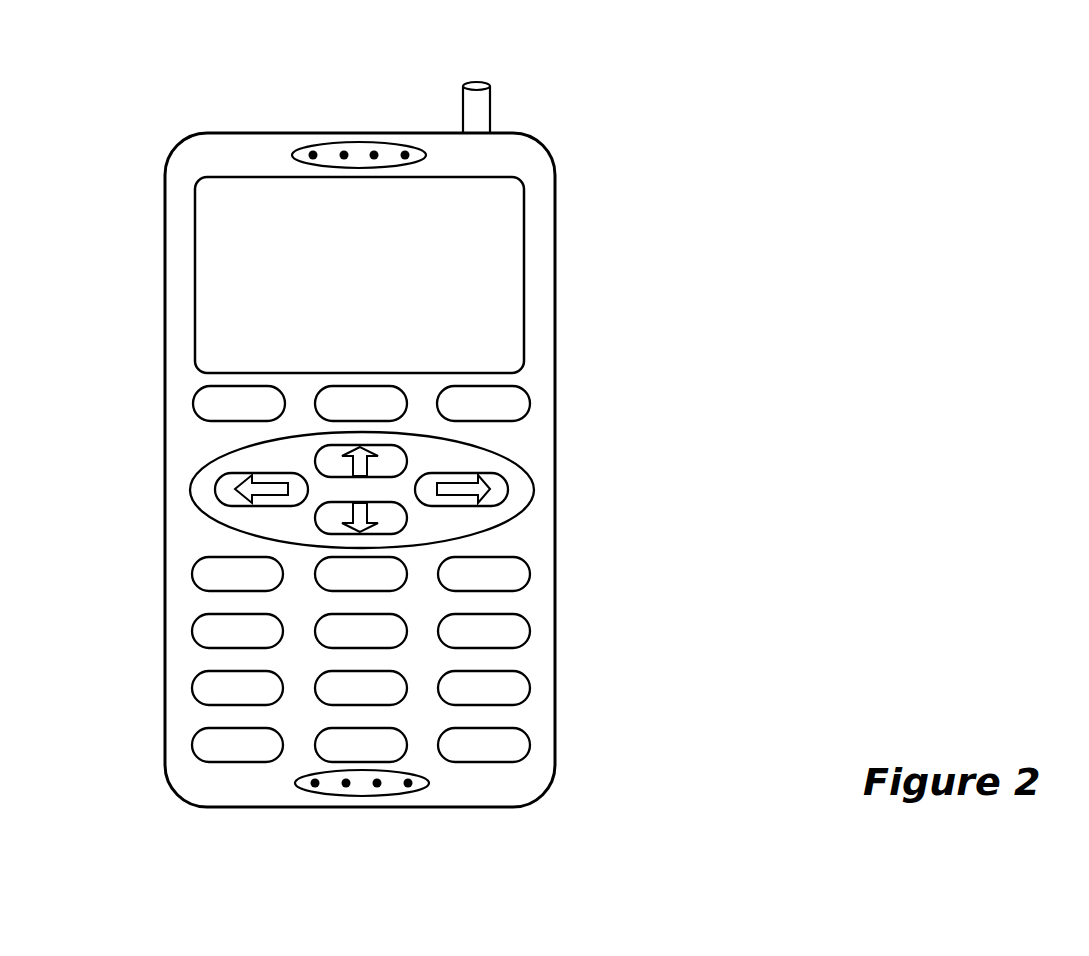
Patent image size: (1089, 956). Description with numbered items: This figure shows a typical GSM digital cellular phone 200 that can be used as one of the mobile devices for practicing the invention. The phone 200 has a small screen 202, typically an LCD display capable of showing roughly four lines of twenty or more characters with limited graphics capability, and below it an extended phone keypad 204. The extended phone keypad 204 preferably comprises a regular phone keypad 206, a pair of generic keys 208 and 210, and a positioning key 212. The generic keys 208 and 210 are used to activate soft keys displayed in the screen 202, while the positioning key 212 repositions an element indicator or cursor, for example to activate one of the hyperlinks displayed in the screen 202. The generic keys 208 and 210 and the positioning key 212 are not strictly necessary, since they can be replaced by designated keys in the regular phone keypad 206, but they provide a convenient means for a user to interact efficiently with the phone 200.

The GSM digital cellular phone 200 is at (803, 214).
The screen 202 is at (512, 292).
The extended phone keypad 204 is at (158, 395).
The regular phone keypad 206 is at (564, 560).
The generic key 208 is at (193, 403).
The generic key 210 is at (520, 404).
The positioning key 212 is at (523, 487).